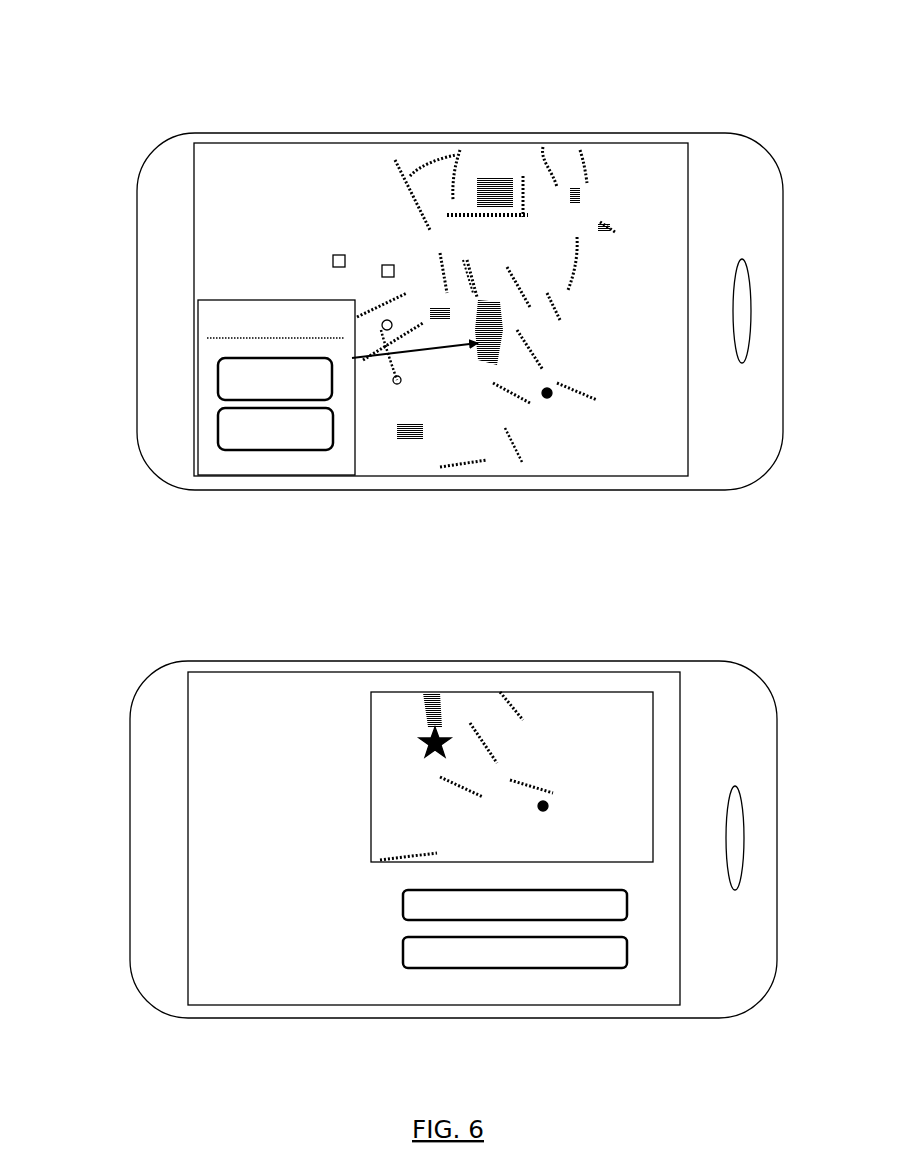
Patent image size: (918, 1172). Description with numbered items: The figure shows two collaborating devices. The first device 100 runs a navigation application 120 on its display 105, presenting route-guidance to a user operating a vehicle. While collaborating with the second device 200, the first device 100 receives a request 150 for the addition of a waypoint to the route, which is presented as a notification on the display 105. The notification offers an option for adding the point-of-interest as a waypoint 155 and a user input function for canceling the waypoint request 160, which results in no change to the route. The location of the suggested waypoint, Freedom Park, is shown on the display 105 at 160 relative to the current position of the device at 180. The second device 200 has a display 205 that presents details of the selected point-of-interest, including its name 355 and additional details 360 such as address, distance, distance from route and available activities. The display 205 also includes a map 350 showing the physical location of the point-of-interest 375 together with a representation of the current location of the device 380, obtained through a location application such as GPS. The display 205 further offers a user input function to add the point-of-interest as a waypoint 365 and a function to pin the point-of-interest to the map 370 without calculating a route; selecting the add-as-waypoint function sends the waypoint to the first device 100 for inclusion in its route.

The first device 100 is at (698, 130).
The display 105 is at (603, 138).
The navigation application 120 is at (497, 172).
The request 150 is at (215, 308).
The option for adding the point-of-interest as a waypoint 155 is at (218, 365).
The user input function for canceling the waypoint request 160 is at (225, 425).
The current position of the device 180 is at (549, 397).
The second device 200 is at (690, 662).
The display 205 is at (585, 670).
The map 350 is at (545, 710).
The name 355 is at (295, 690).
The additional details 360 is at (200, 896).
The user input function to add the point-of-interest as a waypoint 365 is at (413, 905).
The pin to map button 370 is at (450, 952).
The point-of-interest 375 is at (432, 735).
The current location of the device 380 is at (540, 795).